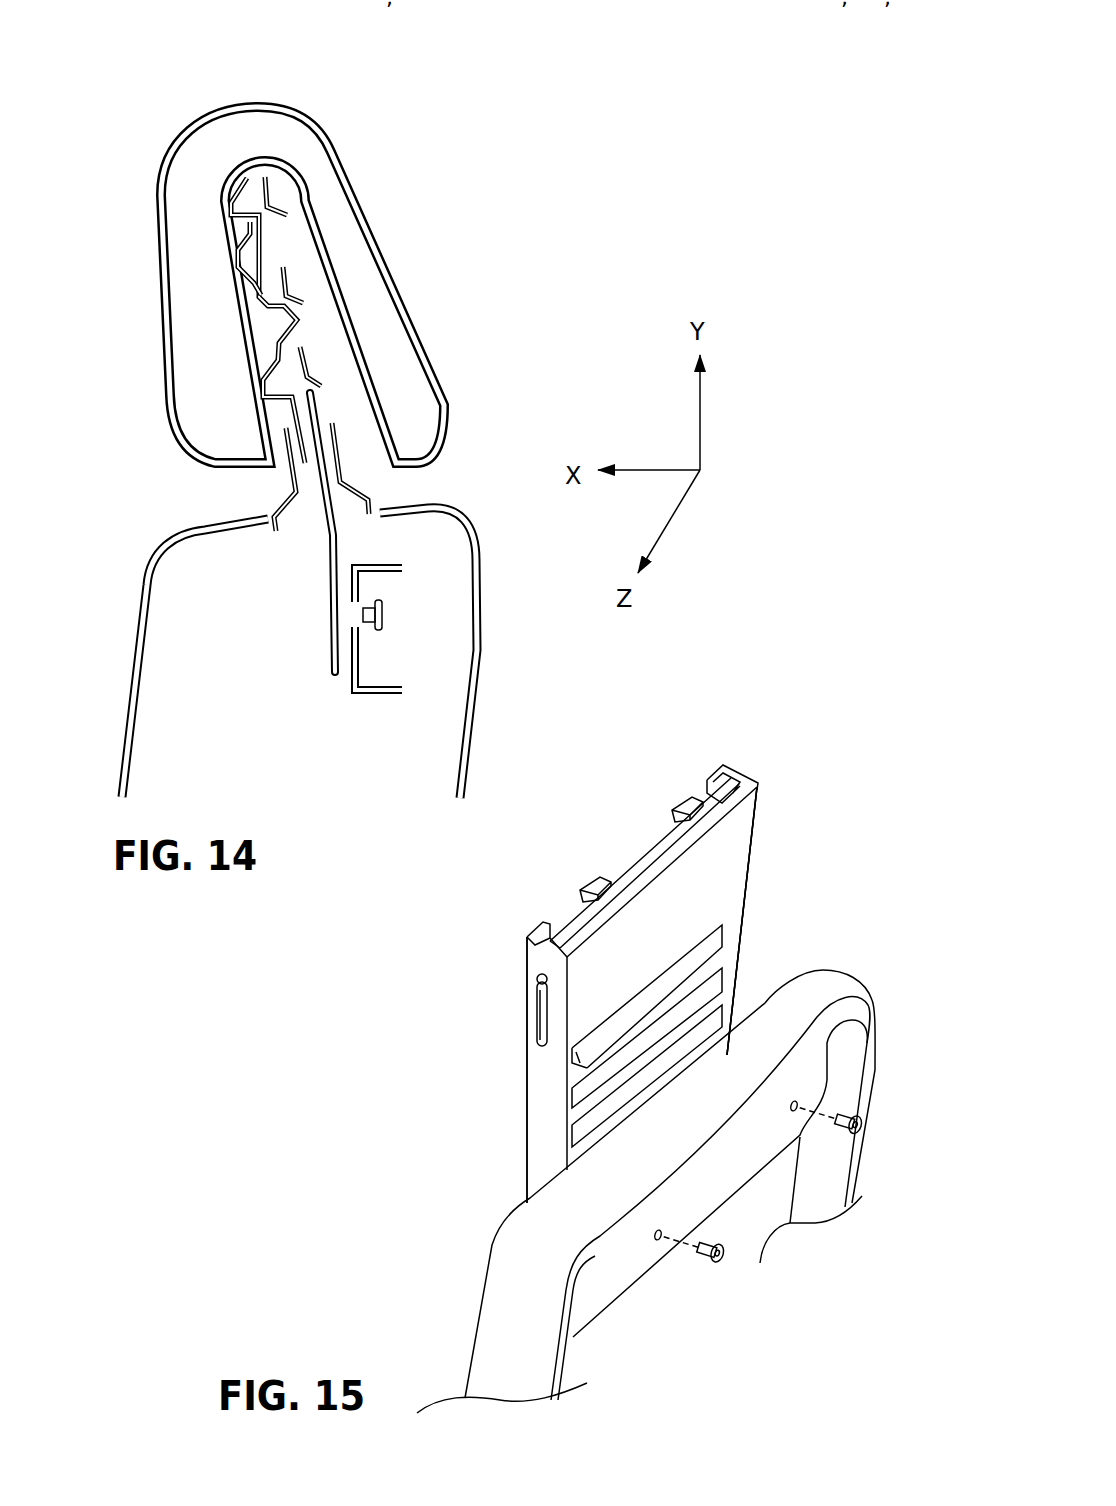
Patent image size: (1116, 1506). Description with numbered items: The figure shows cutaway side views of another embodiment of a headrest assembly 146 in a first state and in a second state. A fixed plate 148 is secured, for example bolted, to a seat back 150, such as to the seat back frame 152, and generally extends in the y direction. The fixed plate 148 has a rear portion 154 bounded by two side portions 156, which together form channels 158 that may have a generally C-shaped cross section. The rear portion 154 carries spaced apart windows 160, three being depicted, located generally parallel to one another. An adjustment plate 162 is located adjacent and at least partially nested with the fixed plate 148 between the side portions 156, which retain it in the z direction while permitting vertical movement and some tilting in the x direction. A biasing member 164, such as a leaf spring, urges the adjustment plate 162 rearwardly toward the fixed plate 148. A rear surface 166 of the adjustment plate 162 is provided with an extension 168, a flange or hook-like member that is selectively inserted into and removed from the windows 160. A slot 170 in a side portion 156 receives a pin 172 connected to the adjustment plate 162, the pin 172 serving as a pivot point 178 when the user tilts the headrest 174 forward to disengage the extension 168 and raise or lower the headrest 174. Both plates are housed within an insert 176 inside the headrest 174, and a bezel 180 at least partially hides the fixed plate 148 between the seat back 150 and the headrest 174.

In FIG. 14, the headrest assembly 146 is at (402, 124).
In FIG. 15, the headrest assembly 146 is at (820, 793).
In FIG. 14, the fixed plate 148 is at (330, 604).
In FIG. 15, the fixed plate 148 is at (745, 835).
In FIG. 14, the seat back 150 is at (484, 607).
In FIG. 15, the seat back 150 is at (880, 1067).
In FIG. 14, the seat back frame 152 is at (376, 695).
In FIG. 15, the seat back frame 152 is at (505, 1250).
In FIG. 14, the rear portion 154 is at (340, 532).
In FIG. 15, the rear portion 154 is at (752, 888).
In FIG. 15, the side portions 156 is at (743, 773).
In FIG. 15, the channels 158 is at (711, 771).
In FIG. 14, the windows 160 is at (280, 235).
In FIG. 15, the windows 160 is at (718, 928).
In FIG. 14, the adjustment plate 162 is at (262, 282).
In FIG. 15, the adjustment plate 162 is at (647, 852).
In FIG. 14, the biasing member 164 is at (256, 260).
In FIG. 14, the rear surface 166 is at (270, 257).
In FIG. 14, the extension 168 is at (305, 318).
In FIG. 15, the extension 168 is at (632, 1012).
In FIG. 15, the slot 170 is at (537, 1028).
In FIG. 15, the pin 172 is at (537, 981).
In FIG. 14, the headrest 174 is at (183, 211).
In FIG. 14, the insert 176 is at (252, 160).
In FIG. 14, the pivot point 178 is at (261, 228).
In FIG. 14, the bezel 180 is at (281, 496).